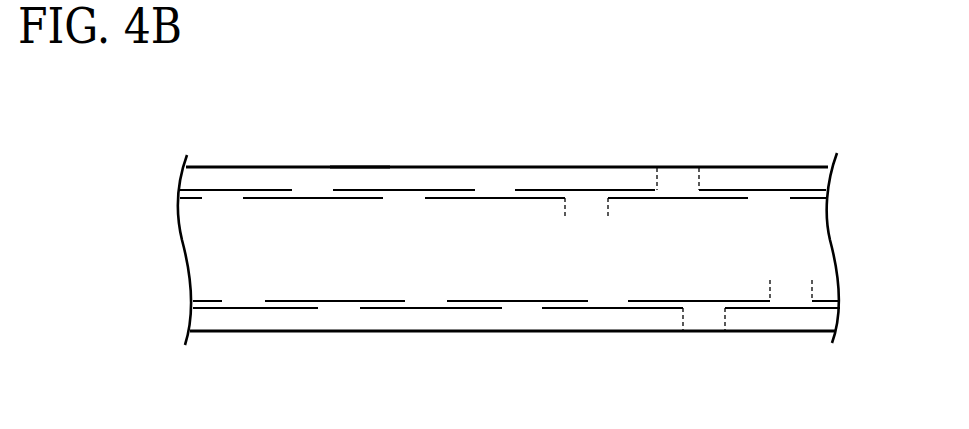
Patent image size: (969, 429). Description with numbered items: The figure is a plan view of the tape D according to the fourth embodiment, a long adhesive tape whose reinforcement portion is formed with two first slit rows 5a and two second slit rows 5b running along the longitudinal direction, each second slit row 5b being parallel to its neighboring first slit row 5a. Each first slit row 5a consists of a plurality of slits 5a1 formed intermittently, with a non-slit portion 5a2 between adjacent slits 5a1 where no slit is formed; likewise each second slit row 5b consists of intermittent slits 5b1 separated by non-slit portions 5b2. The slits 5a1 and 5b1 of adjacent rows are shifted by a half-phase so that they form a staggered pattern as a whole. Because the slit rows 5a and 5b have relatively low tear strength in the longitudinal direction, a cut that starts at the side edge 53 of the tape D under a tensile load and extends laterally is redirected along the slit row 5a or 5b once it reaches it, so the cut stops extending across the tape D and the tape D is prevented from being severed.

The side edge 53 is at (558, 167).
The tape D is at (360, 167).
The first slit row 5a is at (178, 191).
The second slit row 5b is at (178, 196).
The slit 5a1 is at (455, 190).
The slit 5b1 is at (498, 198).
The non-slit portion 5a2 is at (699, 163).
The non-slit portion 5b2 is at (608, 220).